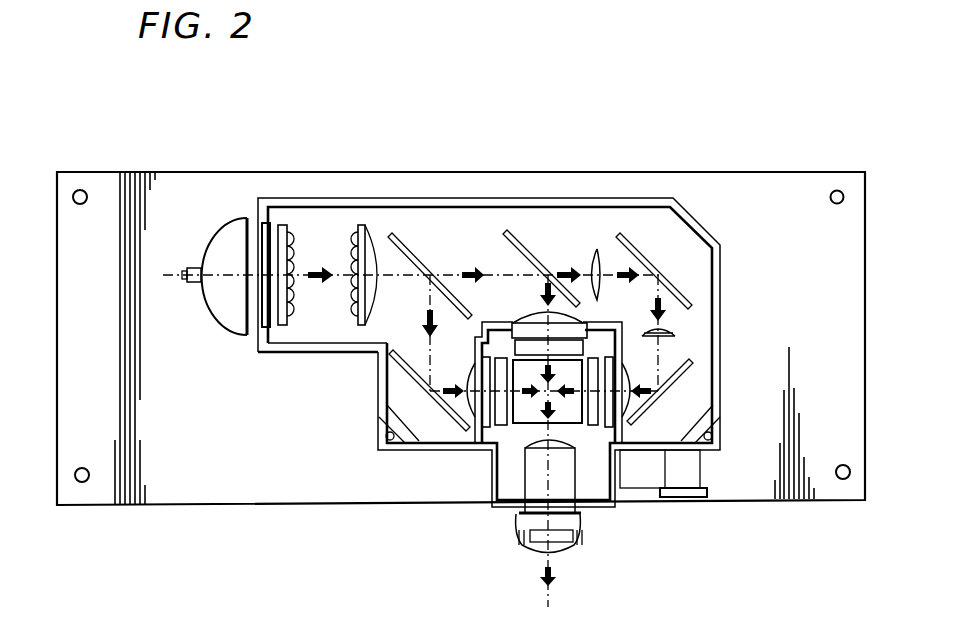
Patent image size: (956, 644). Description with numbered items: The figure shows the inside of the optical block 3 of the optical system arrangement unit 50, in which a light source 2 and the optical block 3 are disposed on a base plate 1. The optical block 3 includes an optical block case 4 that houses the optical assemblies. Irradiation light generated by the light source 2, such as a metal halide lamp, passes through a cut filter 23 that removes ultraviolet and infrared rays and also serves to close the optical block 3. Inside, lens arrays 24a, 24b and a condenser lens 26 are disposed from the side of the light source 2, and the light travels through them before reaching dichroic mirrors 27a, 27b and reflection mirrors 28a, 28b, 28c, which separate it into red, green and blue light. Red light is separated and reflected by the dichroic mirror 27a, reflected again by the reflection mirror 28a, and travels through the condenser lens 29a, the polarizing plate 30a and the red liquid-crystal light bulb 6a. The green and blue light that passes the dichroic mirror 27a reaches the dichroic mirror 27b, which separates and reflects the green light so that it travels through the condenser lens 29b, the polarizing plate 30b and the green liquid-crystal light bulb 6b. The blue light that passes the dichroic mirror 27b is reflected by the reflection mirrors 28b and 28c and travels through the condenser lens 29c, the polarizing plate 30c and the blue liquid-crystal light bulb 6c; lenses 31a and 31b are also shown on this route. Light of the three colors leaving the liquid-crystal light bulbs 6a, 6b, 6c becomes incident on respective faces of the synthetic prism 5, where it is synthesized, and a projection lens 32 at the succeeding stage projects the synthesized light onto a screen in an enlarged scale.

The base plate 1 is at (107, 196).
The light source 2 is at (207, 249).
The optical block 3 is at (736, 300).
The optical block case 4 is at (288, 353).
The synthetic prism 5 is at (527, 408).
The red liquid-crystal light bulb 6a is at (487, 430).
The green liquid-crystal light bulb 6b is at (512, 346).
The blue liquid-crystal light bulb 6c is at (617, 428).
The cut filter 23 is at (262, 240).
The lens array 24a is at (282, 225).
The lens array 24b is at (355, 235).
The condenser lens 26 is at (375, 232).
The dichroic mirror 27a is at (412, 256).
The dichroic mirror 27b is at (538, 264).
The reflection mirror 28a is at (403, 375).
The reflection mirror 28b is at (643, 257).
The reflection mirror 28c is at (684, 372).
The condenser lens 29a is at (463, 403).
The condenser lens 29b is at (556, 283).
The condenser lens 29c is at (632, 360).
The polarizing plate 30a is at (483, 428).
The polarizing plate 30b is at (516, 315).
The polarizing plate 30c is at (629, 434).
The lens 31a is at (596, 249).
The lens 31b is at (676, 328).
The projection lens 32 is at (567, 480).
The optical system arrangement unit 50 is at (772, 123).